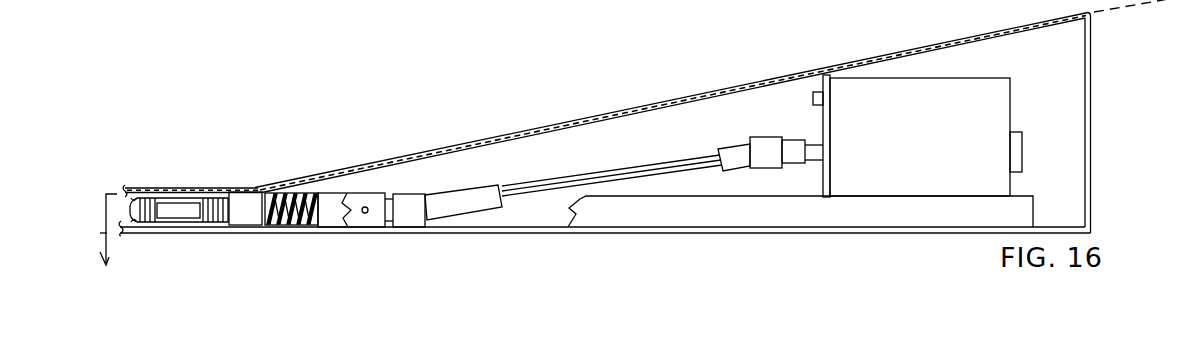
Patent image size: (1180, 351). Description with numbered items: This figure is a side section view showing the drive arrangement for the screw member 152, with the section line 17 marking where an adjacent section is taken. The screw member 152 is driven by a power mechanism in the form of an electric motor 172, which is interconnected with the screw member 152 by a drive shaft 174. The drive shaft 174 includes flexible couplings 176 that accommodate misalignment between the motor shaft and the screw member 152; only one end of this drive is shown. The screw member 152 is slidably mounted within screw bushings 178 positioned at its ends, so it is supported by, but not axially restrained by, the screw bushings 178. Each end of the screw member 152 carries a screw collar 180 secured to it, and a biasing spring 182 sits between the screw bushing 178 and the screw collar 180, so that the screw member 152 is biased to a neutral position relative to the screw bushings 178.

The section line 17- 17 is at (640, 132).
The screw member 152 is at (190, 210).
The screw bushing 178 is at (268, 226).
The biasing spring 182 is at (298, 198).
The screw collar 180 is at (339, 200).
The flexible coupling 176 is at (415, 202).
The drive shaft 174 is at (652, 169).
The electric motor 172 is at (997, 97).